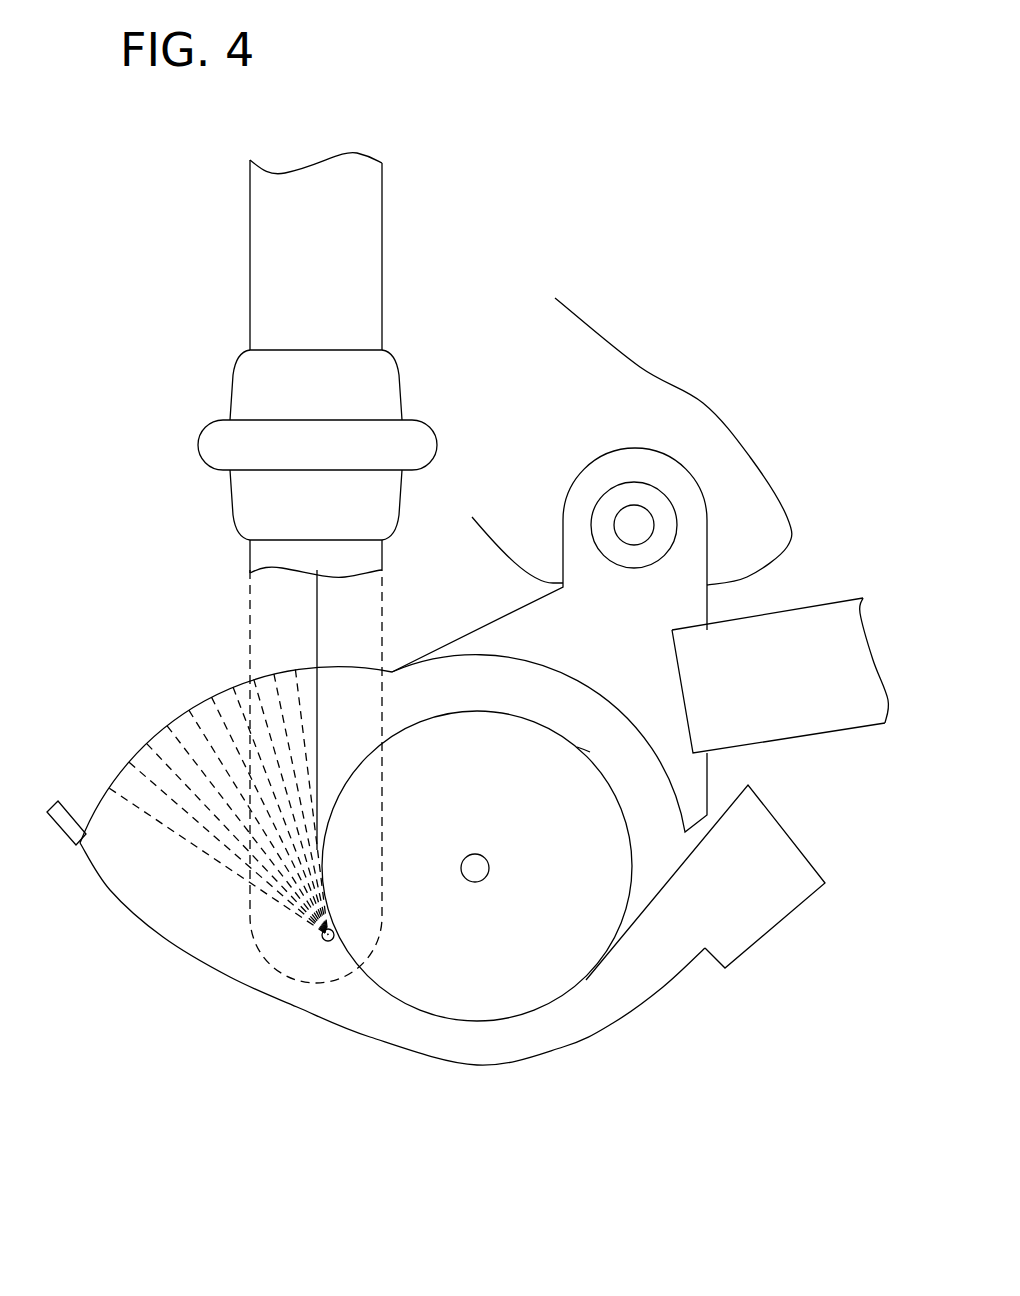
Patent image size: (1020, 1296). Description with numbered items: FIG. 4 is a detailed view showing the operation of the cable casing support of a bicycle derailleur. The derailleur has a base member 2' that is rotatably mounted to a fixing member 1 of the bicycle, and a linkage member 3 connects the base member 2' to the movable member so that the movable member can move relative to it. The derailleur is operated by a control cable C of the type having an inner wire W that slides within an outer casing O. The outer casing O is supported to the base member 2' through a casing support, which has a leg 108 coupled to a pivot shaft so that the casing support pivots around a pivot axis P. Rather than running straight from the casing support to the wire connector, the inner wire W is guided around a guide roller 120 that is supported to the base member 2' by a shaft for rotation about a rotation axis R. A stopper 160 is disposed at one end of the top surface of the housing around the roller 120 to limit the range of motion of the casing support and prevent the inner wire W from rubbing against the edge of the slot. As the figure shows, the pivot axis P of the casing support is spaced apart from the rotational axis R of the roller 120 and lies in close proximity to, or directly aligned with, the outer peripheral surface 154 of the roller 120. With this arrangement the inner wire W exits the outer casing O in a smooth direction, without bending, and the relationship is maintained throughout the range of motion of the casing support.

The outer casing O is at (268, 250).
The control cable C is at (388, 229).
The fixing member 1 is at (595, 365).
The base member 2' is at (549, 560).
The linkage member 3 is at (773, 630).
The leg 108 is at (250, 610).
The guide roller 120 is at (477, 866).
The outer peripheral surface 154 is at (577, 747).
The stopper 160 is at (63, 806).
The pivot axis P is at (334, 928).
The rotation axis R is at (478, 868).
The inner wire W is at (825, 808).